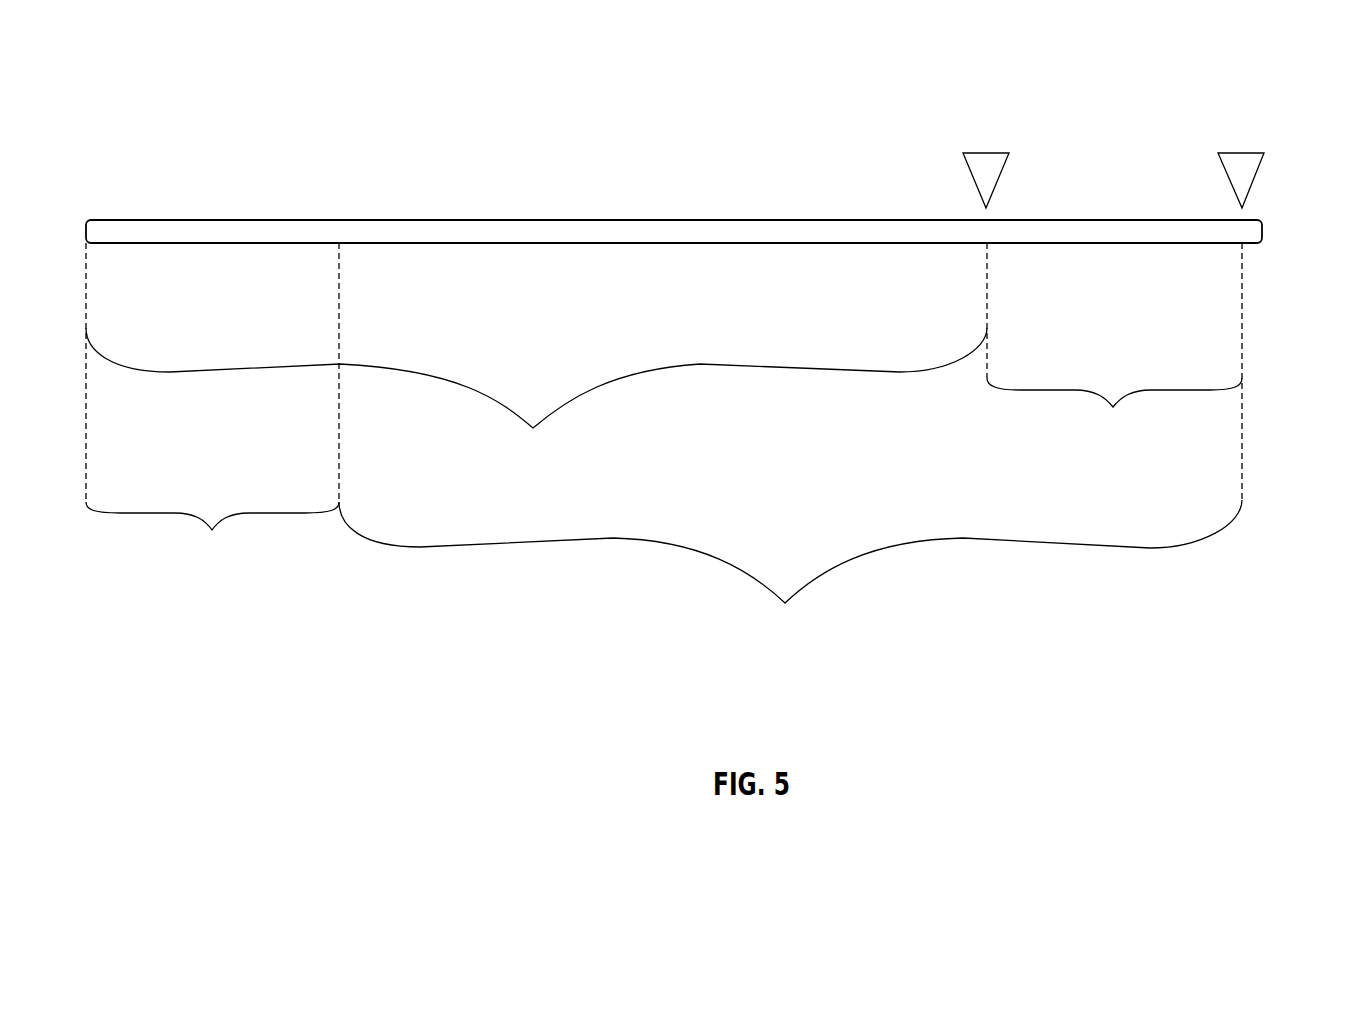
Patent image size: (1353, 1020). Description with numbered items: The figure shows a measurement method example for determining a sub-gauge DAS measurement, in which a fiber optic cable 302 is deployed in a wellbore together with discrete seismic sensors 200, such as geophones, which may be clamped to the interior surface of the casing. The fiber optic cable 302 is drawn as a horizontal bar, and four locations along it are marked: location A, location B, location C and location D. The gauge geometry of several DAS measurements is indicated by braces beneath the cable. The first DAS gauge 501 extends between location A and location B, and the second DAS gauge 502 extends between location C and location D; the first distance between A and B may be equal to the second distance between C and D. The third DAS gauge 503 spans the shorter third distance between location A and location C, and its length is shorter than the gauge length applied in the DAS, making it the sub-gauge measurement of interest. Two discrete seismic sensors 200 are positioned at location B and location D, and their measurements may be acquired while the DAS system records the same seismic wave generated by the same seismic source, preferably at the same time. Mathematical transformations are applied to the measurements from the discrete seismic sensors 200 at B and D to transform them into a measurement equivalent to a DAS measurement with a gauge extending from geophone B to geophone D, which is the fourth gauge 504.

The discrete seismic sensor 200 is at (986, 152).
The fiber optic cable 302 is at (481, 230).
The DAS gauge 1 501 is at (536, 397).
The DAS gauge 2 502 is at (790, 571).
The DAS gauge 3 503 is at (212, 534).
The gauge 4 504 is at (1114, 411).
The location A is at (150, 220).
The location B is at (987, 243).
The location C is at (343, 243).
The location D is at (1264, 232).